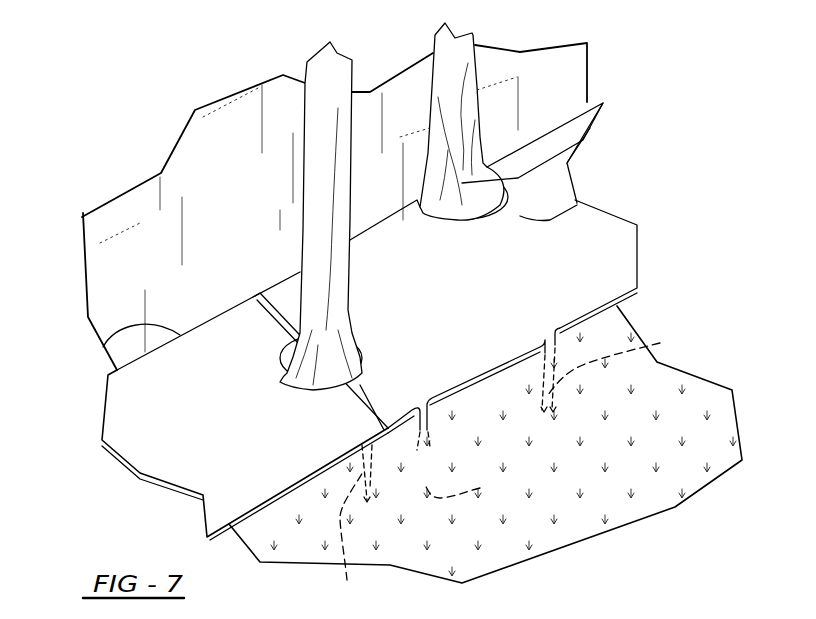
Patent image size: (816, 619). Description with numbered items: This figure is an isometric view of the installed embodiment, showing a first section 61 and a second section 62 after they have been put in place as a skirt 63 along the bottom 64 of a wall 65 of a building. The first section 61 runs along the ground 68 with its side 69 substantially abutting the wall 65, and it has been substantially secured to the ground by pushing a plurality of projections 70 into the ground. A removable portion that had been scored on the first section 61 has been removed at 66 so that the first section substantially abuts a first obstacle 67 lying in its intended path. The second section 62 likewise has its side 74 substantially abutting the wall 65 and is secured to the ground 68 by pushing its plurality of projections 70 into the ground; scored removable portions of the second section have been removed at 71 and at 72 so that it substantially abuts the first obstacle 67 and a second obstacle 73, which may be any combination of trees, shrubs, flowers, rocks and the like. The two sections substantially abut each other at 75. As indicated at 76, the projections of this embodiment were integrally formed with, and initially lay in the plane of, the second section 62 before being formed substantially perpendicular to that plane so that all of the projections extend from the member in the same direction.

The first section 61 is at (125, 467).
The second section 62 is at (638, 253).
The skirt 63 is at (206, 279).
The bottom of wall 64 is at (107, 343).
The wall 65 is at (220, 198).
The removed portion location 66 is at (290, 380).
The first obstacle 67 is at (328, 317).
The ground 68 is at (657, 440).
The side 69 is at (223, 318).
The plurality of projections 70 is at (660, 343).
The removed portion location 71 is at (357, 340).
The removed portion location 72 is at (577, 203).
The second obstacle 73 is at (518, 178).
The side 74 is at (558, 120).
The abutment location 75 is at (393, 440).
The projection forming location 76 is at (420, 400).